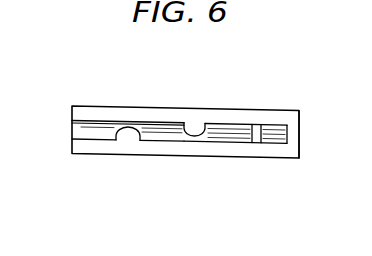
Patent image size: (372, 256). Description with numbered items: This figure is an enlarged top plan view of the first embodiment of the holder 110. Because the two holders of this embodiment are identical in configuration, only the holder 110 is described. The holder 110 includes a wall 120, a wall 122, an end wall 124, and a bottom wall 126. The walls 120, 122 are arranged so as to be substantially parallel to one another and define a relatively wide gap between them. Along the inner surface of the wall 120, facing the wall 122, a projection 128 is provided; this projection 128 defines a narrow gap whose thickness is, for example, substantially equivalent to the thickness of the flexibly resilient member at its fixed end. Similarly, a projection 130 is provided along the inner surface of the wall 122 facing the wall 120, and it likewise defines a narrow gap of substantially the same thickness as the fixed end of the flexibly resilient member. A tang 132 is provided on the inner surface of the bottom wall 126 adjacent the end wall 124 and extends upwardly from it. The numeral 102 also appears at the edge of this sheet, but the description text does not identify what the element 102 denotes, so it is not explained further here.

The key bar 110 is at (194, 100).
The upper surface portion 120 is at (132, 112).
The lower portion 122 is at (97, 148).
The end of key bar 124 is at (298, 132).
The recess 126 is at (238, 125).
The notch 128 is at (196, 137).
The projection 130 is at (131, 134).
The cross bar 132 is at (258, 145).
The housing 102 is at (363, 3).